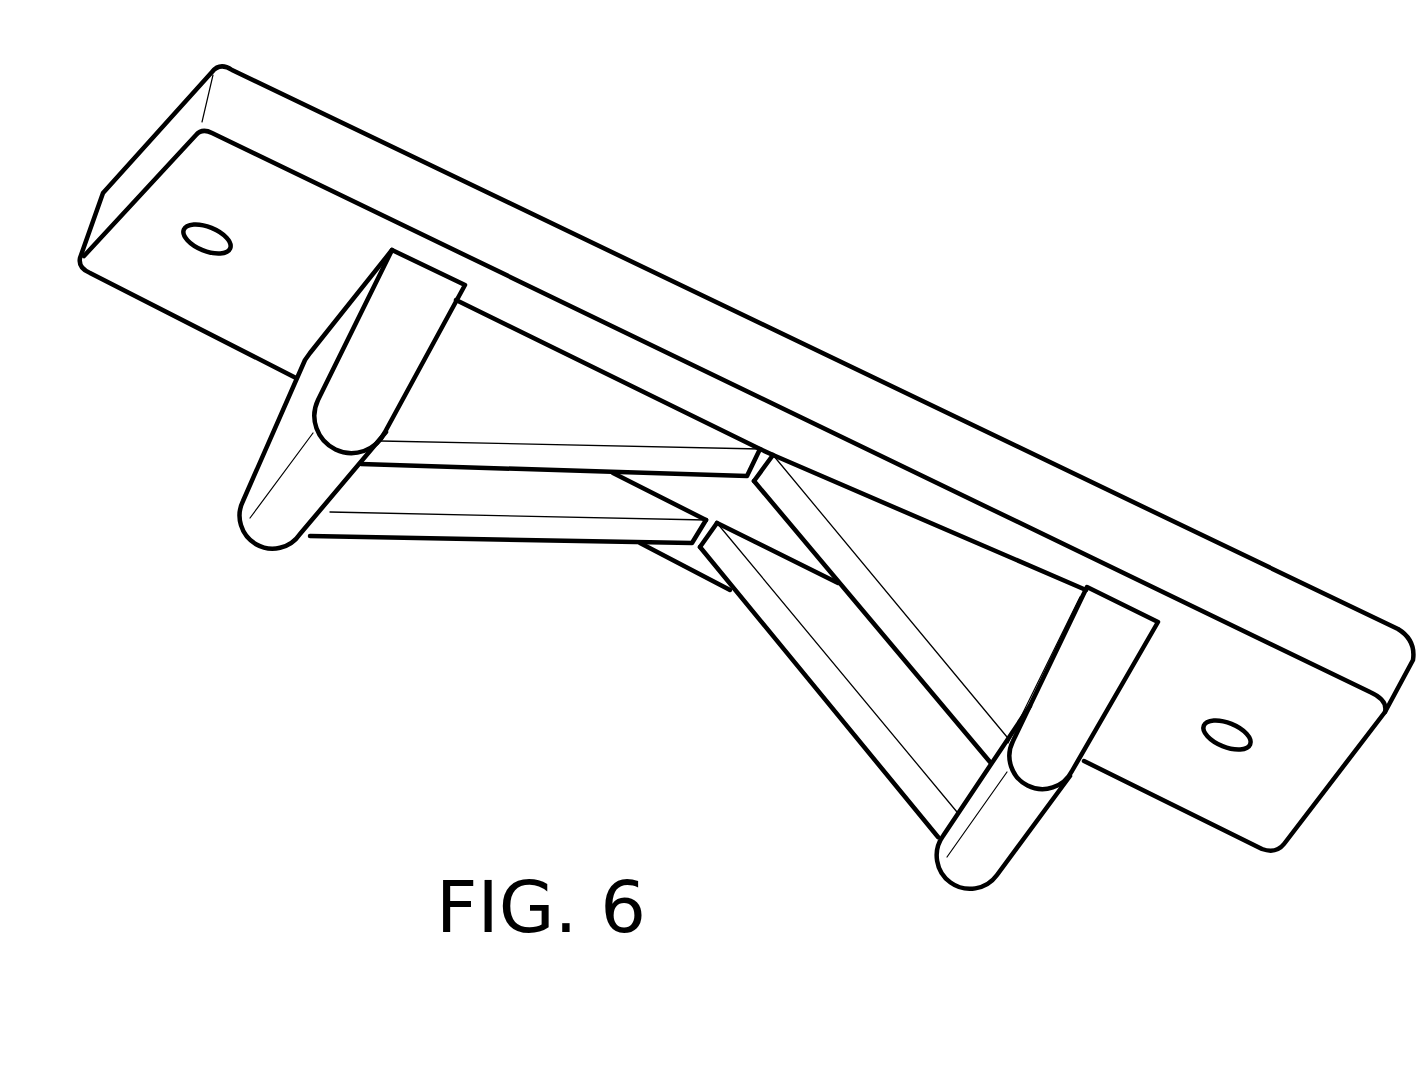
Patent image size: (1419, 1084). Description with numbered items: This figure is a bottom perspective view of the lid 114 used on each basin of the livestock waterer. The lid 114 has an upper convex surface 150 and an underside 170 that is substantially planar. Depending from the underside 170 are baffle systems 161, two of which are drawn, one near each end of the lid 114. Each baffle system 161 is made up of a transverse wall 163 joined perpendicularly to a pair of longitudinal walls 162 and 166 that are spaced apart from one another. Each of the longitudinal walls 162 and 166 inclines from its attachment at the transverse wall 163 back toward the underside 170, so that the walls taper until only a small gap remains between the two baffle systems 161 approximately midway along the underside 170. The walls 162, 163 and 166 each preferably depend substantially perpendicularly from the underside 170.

The lid 114 is at (950, 248).
The upper convex surface 150 is at (1235, 554).
The baffle system 161 is at (272, 433).
The longitudinal wall 162 is at (447, 540).
The transverse wall 163 is at (265, 550).
The longitudinal wall 166 is at (540, 403).
The underside 170 is at (1165, 769).